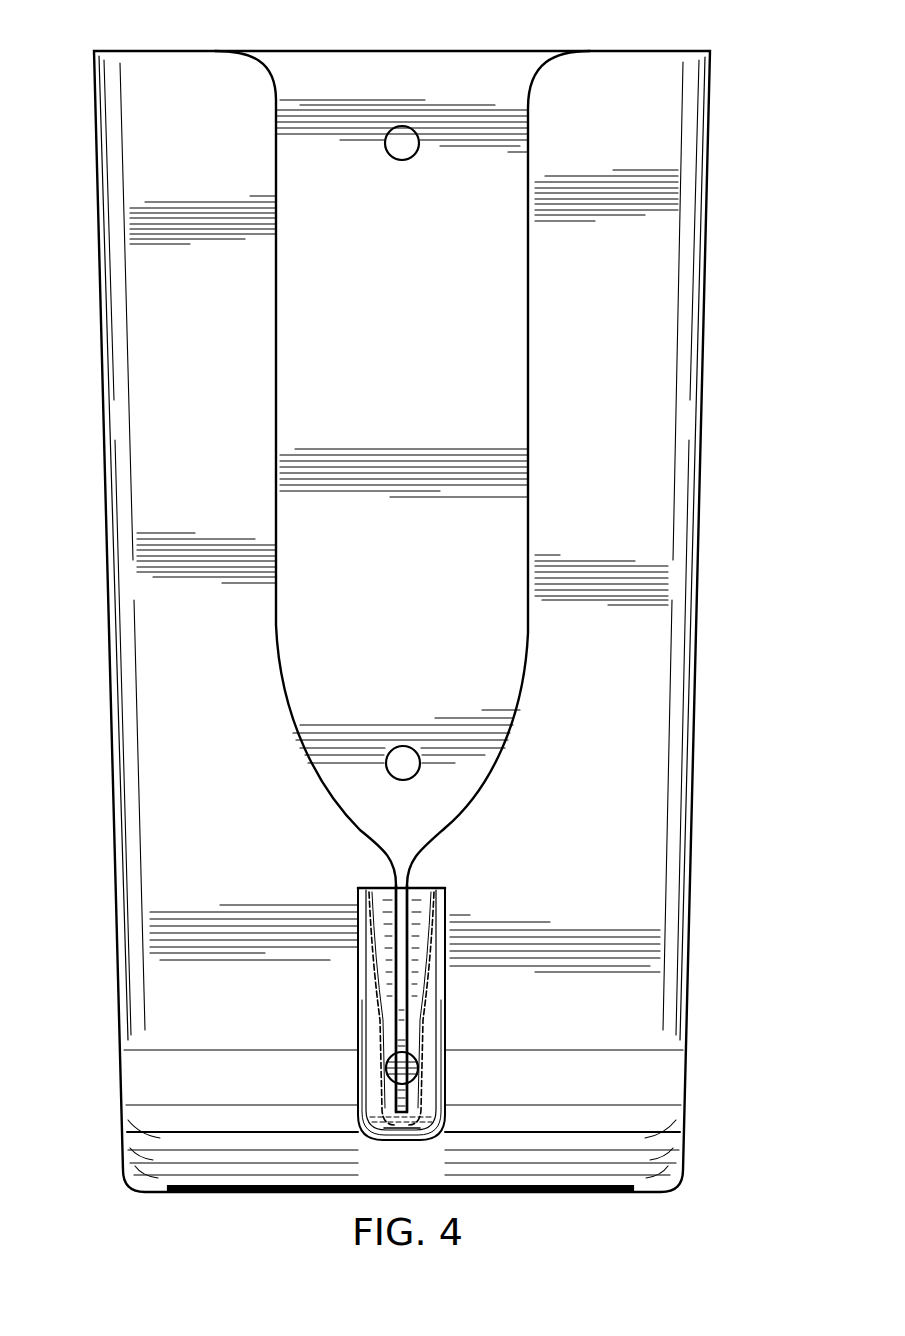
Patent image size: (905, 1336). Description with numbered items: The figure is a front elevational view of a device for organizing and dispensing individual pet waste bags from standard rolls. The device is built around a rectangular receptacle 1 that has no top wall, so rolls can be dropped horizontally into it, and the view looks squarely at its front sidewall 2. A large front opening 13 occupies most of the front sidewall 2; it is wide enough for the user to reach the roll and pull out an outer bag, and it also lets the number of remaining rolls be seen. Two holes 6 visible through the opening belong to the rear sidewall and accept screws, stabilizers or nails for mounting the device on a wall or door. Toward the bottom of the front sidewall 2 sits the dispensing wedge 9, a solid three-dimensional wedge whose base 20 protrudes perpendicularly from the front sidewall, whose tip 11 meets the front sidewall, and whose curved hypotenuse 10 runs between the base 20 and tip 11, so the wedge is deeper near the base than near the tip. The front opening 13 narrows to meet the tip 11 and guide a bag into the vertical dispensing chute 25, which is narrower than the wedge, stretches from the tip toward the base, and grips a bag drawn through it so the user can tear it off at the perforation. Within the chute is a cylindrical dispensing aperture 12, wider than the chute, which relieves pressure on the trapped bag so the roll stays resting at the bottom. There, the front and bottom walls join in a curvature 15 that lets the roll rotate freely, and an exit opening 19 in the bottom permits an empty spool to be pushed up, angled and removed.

The rectangular receptacle 1 is at (768, 52).
The front sidewall 2 is at (663, 320).
The front opening 13 is at (345, 176).
The holes 6 is at (407, 161).
The tip 11 is at (403, 888).
The curved hypotenuse 10 is at (378, 920).
The dispensing wedge 9 is at (430, 1005).
The dispensing chute 25 is at (403, 1018).
The dispensing aperture 12 is at (403, 1073).
The base 20 is at (400, 1137).
The curvature 15 is at (660, 1118).
The exit opening 19 is at (545, 1186).